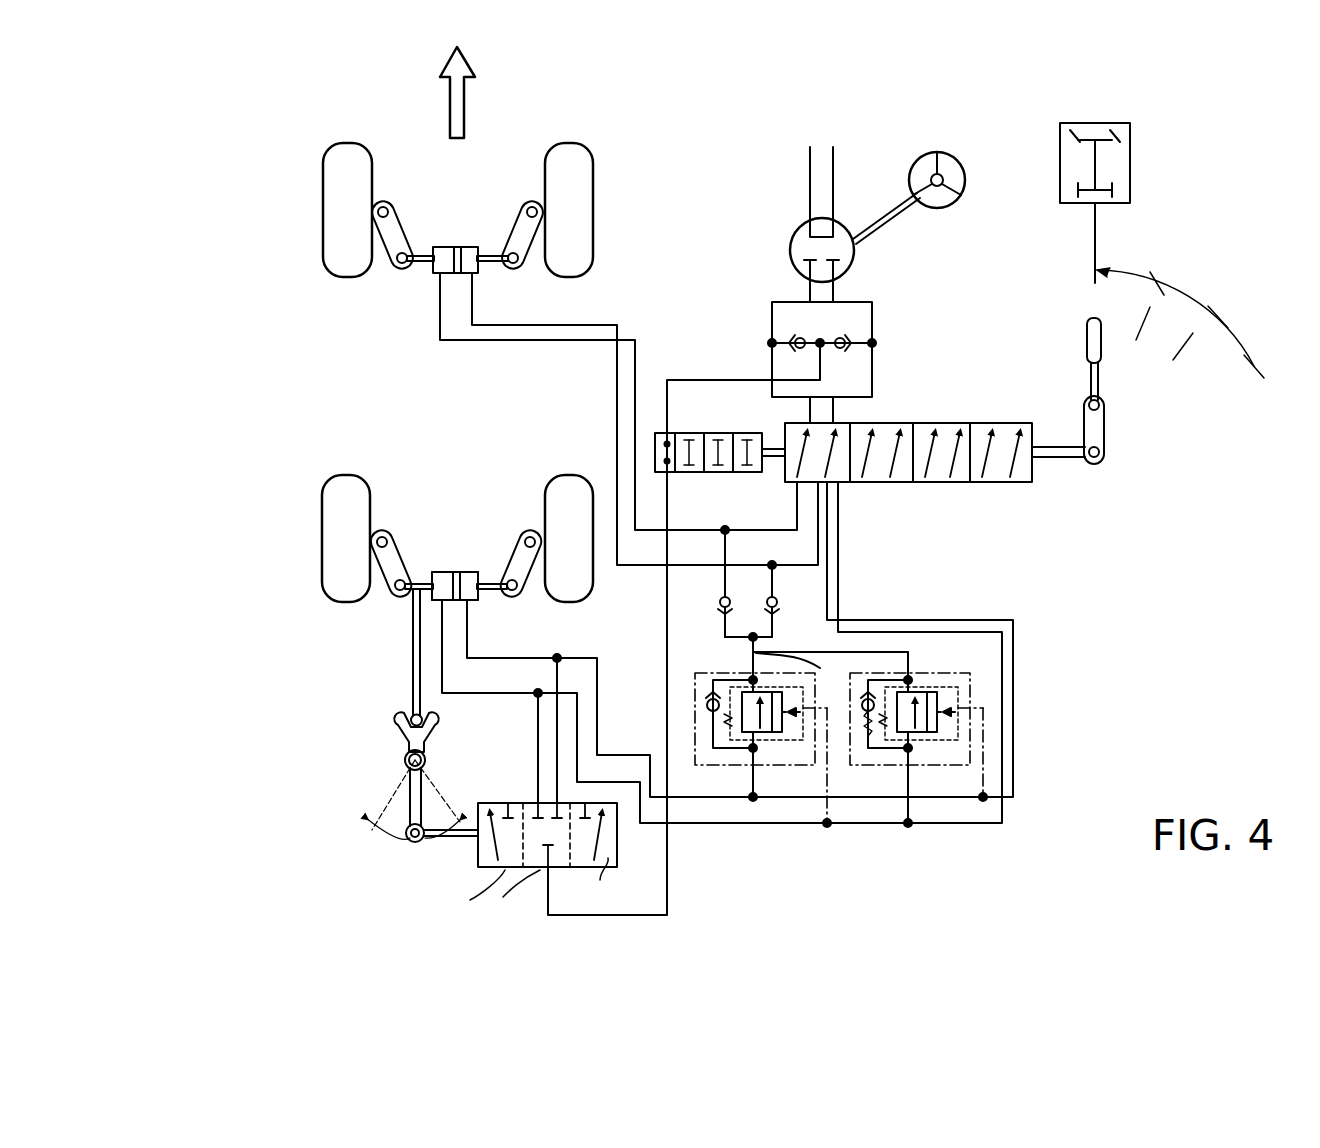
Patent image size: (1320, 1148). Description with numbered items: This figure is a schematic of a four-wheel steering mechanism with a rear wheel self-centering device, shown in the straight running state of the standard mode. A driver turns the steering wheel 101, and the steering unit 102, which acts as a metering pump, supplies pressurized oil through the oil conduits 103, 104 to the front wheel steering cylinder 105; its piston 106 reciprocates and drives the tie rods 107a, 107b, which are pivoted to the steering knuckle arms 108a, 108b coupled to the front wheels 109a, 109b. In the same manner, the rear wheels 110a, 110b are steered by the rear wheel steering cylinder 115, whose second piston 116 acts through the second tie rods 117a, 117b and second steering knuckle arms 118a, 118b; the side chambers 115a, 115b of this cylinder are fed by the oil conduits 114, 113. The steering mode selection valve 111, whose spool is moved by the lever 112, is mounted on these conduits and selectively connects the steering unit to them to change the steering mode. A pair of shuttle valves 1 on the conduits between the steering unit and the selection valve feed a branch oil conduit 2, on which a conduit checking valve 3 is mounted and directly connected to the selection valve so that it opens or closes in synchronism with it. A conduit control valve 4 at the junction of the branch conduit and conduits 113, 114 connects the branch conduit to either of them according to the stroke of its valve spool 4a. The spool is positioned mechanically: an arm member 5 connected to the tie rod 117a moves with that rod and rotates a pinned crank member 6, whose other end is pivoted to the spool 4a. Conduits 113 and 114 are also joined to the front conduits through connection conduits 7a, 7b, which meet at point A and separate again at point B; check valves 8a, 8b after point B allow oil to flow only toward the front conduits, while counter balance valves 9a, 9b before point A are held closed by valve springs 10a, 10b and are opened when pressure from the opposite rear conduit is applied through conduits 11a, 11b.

The shuttle valve 1 is at (840, 343).
The branch oil conduit 2 is at (668, 380).
The conduit checking valve 3 is at (707, 433).
The conduit control valve 4 is at (478, 860).
The valve spool 4a is at (428, 840).
The arm member 5 is at (413, 680).
The crank member 6 is at (410, 795).
The connection conduit 7a is at (725, 628).
The connection conduit 7b is at (776, 607).
The check valve 8a is at (721, 603).
The check valve 8b is at (777, 601).
The counter balance valve 9a is at (773, 733).
The counter balance valve 9b is at (937, 700).
The valve spring 10a is at (733, 722).
The valve spring 10b is at (893, 727).
The conduit 11a is at (828, 763).
The conduit 11b is at (987, 730).
The point A is at (798, 668).
The point B is at (752, 598).
The steering wheel 101 is at (920, 152).
The steering unit 102 is at (793, 232).
The oil conduit 103 is at (632, 338).
The oil conduit 104 is at (615, 392).
The front wheel steering cylinder 105 is at (437, 247).
The piston 106 is at (452, 275).
The tie rod 107a is at (421, 262).
The tie rod 107b is at (497, 253).
The steering knuckle arm 108a is at (385, 205).
The steering knuckle arm 108b is at (522, 200).
The front wheel 109a is at (330, 148).
The front wheel 109b is at (583, 197).
The rear wheel 110a is at (322, 560).
The rear wheel 110b is at (575, 588).
The steering mode selection valve 111 is at (930, 423).
The lever 112 is at (1087, 335).
The oil conduit 113 is at (578, 747).
The oil conduit 114 is at (598, 668).
The rear wheel steering cylinder 115 is at (452, 572).
The side chamber 115a is at (502, 577).
The side chamber 115b is at (437, 605).
The second piston 116 is at (458, 575).
The second tie rod 117a is at (420, 582).
The second tie rod 117b is at (490, 600).
The second steering knuckle arm 118a is at (383, 528).
The second steering knuckle arm 118b is at (532, 528).